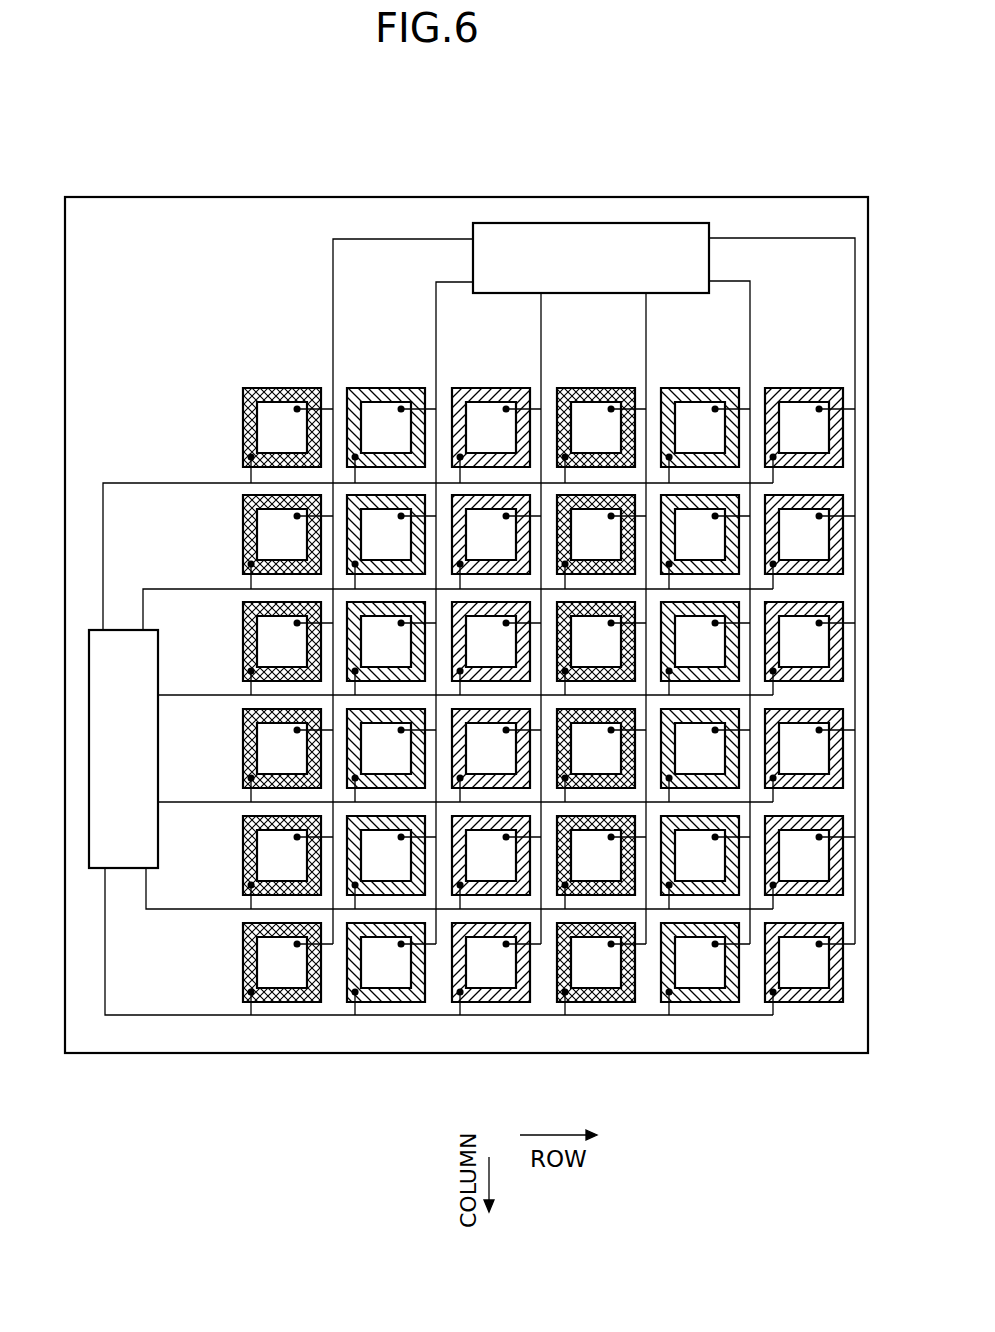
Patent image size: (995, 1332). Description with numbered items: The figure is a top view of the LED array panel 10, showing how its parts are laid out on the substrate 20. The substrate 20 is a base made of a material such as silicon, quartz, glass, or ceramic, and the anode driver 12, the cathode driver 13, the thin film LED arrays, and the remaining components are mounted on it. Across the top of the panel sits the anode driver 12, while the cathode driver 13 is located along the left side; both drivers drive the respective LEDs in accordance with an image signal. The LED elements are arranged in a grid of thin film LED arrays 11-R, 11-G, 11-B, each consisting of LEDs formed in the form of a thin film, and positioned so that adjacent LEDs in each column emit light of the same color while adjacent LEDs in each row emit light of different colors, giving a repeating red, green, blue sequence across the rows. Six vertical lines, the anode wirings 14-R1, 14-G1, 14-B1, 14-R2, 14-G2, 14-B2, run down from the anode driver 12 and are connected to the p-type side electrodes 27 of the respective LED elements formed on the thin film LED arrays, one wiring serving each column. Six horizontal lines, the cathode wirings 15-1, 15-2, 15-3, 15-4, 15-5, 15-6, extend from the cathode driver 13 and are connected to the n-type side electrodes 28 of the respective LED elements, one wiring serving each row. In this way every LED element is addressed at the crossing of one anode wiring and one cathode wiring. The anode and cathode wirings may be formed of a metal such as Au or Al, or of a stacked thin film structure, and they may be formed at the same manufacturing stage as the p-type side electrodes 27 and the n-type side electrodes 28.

The LED array panel 10 is at (318, 137).
The substrate 20 is at (148, 197).
The anode driver 12 is at (607, 223).
The cathode driver 13 is at (89, 752).
The anode wiring 14-R1 is at (333, 281).
The anode wiring 14-G1 is at (436, 321).
The anode wiring 14-B1 is at (541, 321).
The anode wiring 14-R2 is at (646, 321).
The anode wiring 14-G2 is at (750, 321).
The anode wiring 14-B2 is at (855, 276).
The thin film LED array 11-R is at (282, 388).
The thin film LED array 11-G is at (386, 388).
The thin film LED array 11-B is at (491, 388).
The cathode wiring 15-1 is at (152, 483).
The cathode wiring 15-2 is at (195, 589).
The cathode wiring 15-3 is at (195, 695).
The cathode wiring 15-4 is at (195, 802).
The cathode wiring 15-5 is at (195, 909).
The cathode wiring 15-6 is at (154, 1015).
The p-type side electrode 27 is at (297, 409).
The n-type side electrode 28 is at (251, 457).